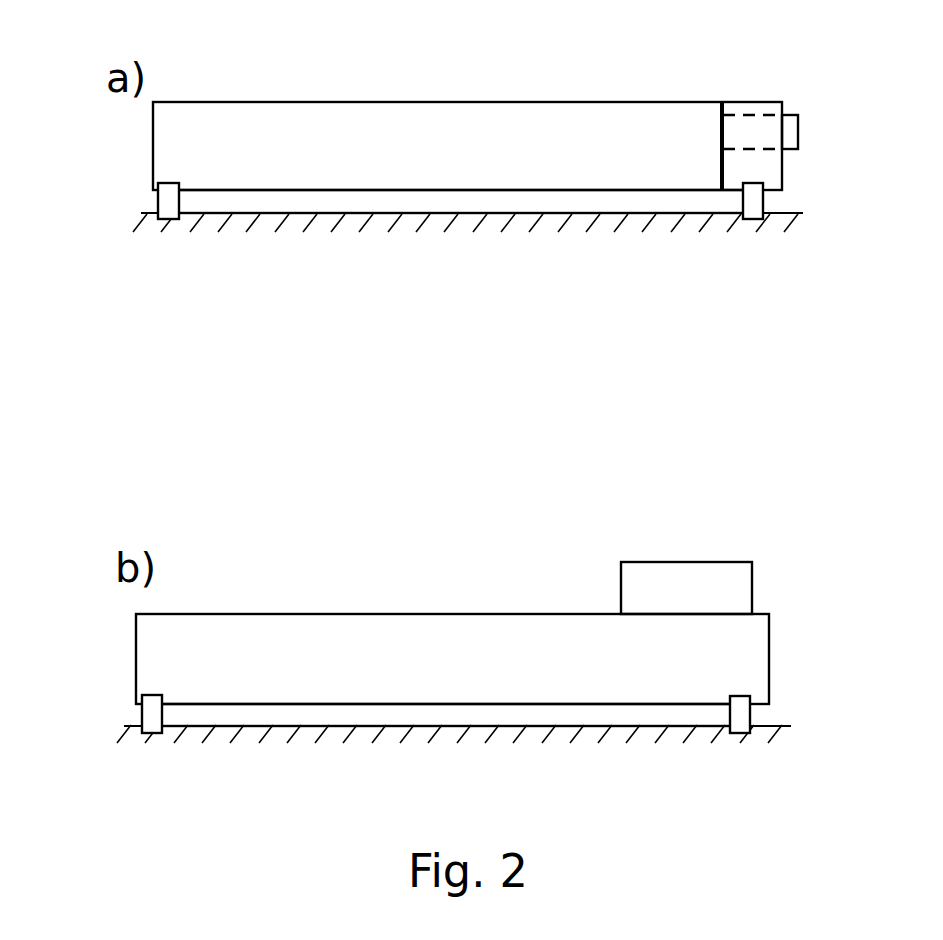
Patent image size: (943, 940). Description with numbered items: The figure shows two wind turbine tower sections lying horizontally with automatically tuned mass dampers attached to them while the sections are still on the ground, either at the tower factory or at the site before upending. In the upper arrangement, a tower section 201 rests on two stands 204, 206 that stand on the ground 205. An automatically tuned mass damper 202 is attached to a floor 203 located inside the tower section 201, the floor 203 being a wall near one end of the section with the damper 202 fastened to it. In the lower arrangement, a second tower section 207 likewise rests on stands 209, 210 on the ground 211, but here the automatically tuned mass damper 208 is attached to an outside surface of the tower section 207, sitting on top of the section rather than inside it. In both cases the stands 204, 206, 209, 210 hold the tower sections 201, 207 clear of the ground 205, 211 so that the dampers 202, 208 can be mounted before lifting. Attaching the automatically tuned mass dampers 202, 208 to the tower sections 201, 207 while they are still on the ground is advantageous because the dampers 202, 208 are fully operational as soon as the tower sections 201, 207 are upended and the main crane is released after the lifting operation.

The tower section 201 is at (438, 122).
The automatically tuned mass damper 202 is at (750, 130).
The floor 203 is at (720, 163).
The stand 204 is at (168, 202).
The ground 205 is at (327, 218).
The stand 206 is at (753, 202).
The tower section 207 is at (385, 628).
The automatically tuned mass damper 208 is at (713, 574).
The stand 209 is at (155, 712).
The stand 210 is at (738, 717).
The ground 211 is at (364, 732).